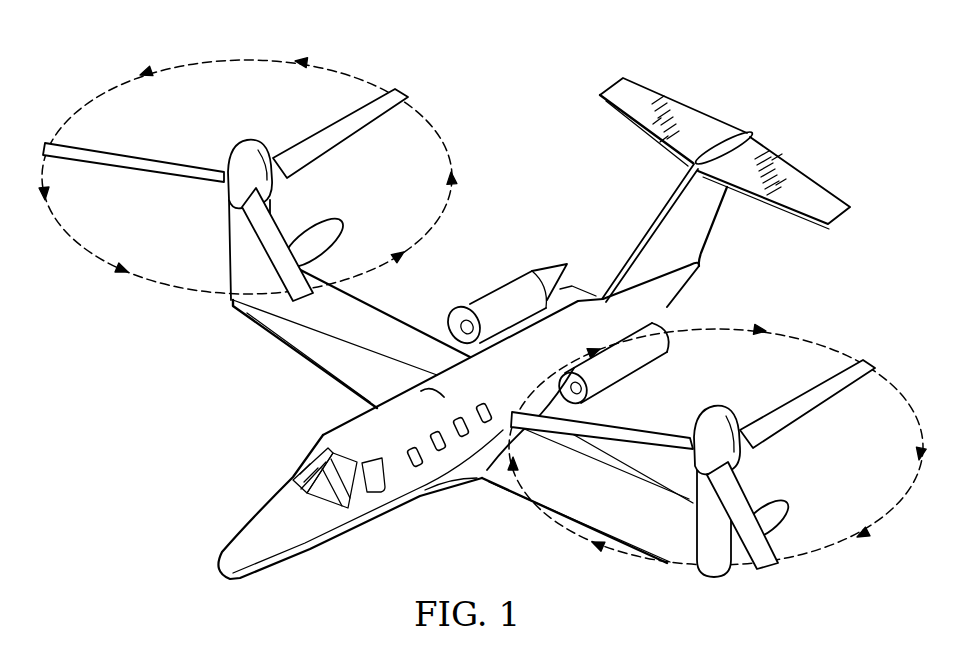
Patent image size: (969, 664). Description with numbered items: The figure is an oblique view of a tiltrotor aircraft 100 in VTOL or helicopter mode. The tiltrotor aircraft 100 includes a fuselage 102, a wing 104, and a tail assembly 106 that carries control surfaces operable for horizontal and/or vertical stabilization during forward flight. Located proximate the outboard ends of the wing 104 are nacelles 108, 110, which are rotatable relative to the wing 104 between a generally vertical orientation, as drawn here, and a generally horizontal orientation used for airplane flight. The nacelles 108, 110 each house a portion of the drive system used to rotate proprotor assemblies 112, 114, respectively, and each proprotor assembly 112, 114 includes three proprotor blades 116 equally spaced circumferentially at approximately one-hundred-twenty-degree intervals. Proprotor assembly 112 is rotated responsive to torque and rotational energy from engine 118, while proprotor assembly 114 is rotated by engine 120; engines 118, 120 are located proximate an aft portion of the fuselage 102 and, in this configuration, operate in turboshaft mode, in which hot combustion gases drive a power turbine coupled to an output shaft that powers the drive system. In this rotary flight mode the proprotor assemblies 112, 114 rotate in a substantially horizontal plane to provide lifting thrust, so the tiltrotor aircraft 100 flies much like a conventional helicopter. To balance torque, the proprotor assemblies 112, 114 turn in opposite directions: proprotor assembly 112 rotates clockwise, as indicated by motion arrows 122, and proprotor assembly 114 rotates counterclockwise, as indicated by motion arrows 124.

The tiltrotor aircraft 100 is at (826, 68).
The fuselage 102 is at (258, 518).
The wing 104 is at (325, 362).
The tail assembly 106 is at (700, 122).
The nacelle 108 is at (700, 500).
The nacelle 110 is at (240, 236).
The proprotor assembly 112 is at (865, 358).
The proprotor assembly 114 is at (402, 88).
The proprotor blades 116 is at (157, 157).
The engine 118 is at (625, 370).
The engine 120 is at (487, 300).
The motion arrows 122 is at (810, 556).
The motion arrows 124 is at (212, 61).